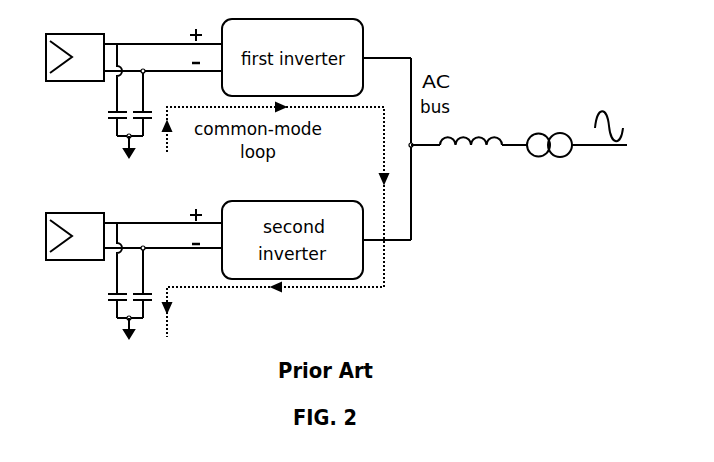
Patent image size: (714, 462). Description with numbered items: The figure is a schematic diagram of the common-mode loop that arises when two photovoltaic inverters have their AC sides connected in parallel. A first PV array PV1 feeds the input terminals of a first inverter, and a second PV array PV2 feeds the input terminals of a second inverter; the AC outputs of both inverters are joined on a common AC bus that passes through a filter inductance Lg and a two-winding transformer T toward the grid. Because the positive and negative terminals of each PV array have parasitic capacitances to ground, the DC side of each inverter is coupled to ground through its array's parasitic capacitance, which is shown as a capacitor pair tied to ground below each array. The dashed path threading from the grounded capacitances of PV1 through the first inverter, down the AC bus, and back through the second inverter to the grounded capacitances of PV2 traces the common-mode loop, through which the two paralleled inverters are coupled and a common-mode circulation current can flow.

The PV array PV1 is at (75, 70).
The PV array PV2 is at (75, 249).
The AC filter Lg is at (471, 131).
The two-winding transformer T is at (549, 159).